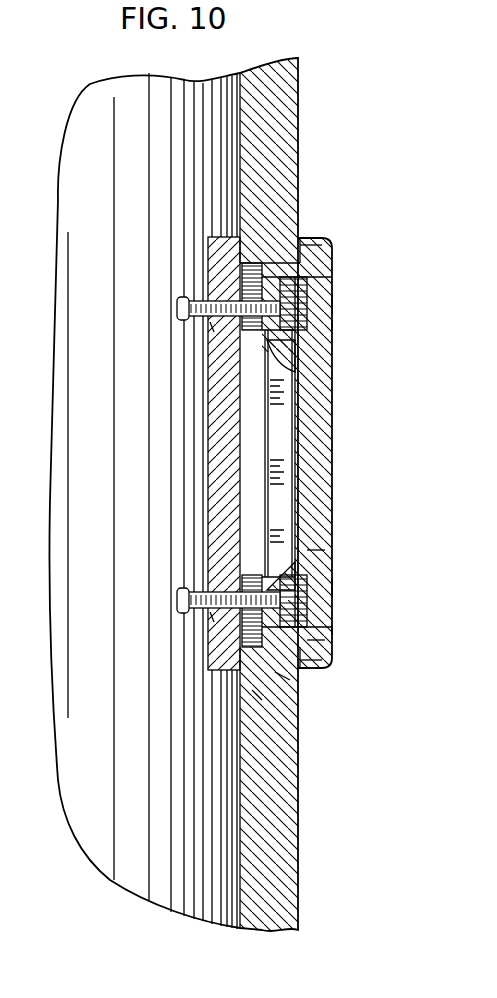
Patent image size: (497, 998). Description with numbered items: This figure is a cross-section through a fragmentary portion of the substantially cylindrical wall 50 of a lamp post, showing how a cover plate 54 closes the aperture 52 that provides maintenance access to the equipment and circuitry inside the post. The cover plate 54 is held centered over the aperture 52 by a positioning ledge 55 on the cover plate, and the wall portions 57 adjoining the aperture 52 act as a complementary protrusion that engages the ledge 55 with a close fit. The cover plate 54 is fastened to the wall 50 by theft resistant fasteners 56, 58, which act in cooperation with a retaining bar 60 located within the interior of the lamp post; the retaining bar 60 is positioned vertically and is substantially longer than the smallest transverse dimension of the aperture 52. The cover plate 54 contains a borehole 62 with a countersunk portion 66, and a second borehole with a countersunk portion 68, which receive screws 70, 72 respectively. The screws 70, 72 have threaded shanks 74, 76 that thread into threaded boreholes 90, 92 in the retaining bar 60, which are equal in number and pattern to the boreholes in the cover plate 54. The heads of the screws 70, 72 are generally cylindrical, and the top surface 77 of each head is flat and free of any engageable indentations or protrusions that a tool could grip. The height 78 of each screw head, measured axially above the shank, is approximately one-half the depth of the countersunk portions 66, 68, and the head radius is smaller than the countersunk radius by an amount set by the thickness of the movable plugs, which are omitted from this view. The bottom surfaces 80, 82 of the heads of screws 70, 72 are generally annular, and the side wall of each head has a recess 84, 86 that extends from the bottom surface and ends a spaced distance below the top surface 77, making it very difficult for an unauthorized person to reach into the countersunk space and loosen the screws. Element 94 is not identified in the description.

The wall 50 is at (298, 135).
The aperture 52 is at (230, 283).
The cover plate 54 is at (333, 440).
The ledge 55 is at (282, 675).
The theft resistant fastener 56 is at (350, 300).
The wall portions 57 is at (258, 695).
The theft resistant fastener 58 is at (333, 588).
The retaining bar 60 is at (210, 277).
The borehole 62 is at (242, 262).
The countersunk portion 66 is at (305, 333).
The countersunk portion 68 is at (313, 638).
The screw 70 is at (307, 285).
The screw 72 is at (307, 597).
The threaded shank 74 is at (178, 306).
The threaded shank 76 is at (178, 593).
The top surface 77 is at (333, 318).
The height 78 is at (315, 553).
The bottom surface 80 is at (283, 352).
The bottom surface 82 is at (262, 560).
The recess 84 is at (312, 250).
The recess 86 is at (305, 670).
The threaded borehole 90 is at (200, 322).
The threaded borehole 92 is at (200, 617).
The element 94 is at (32, 992).